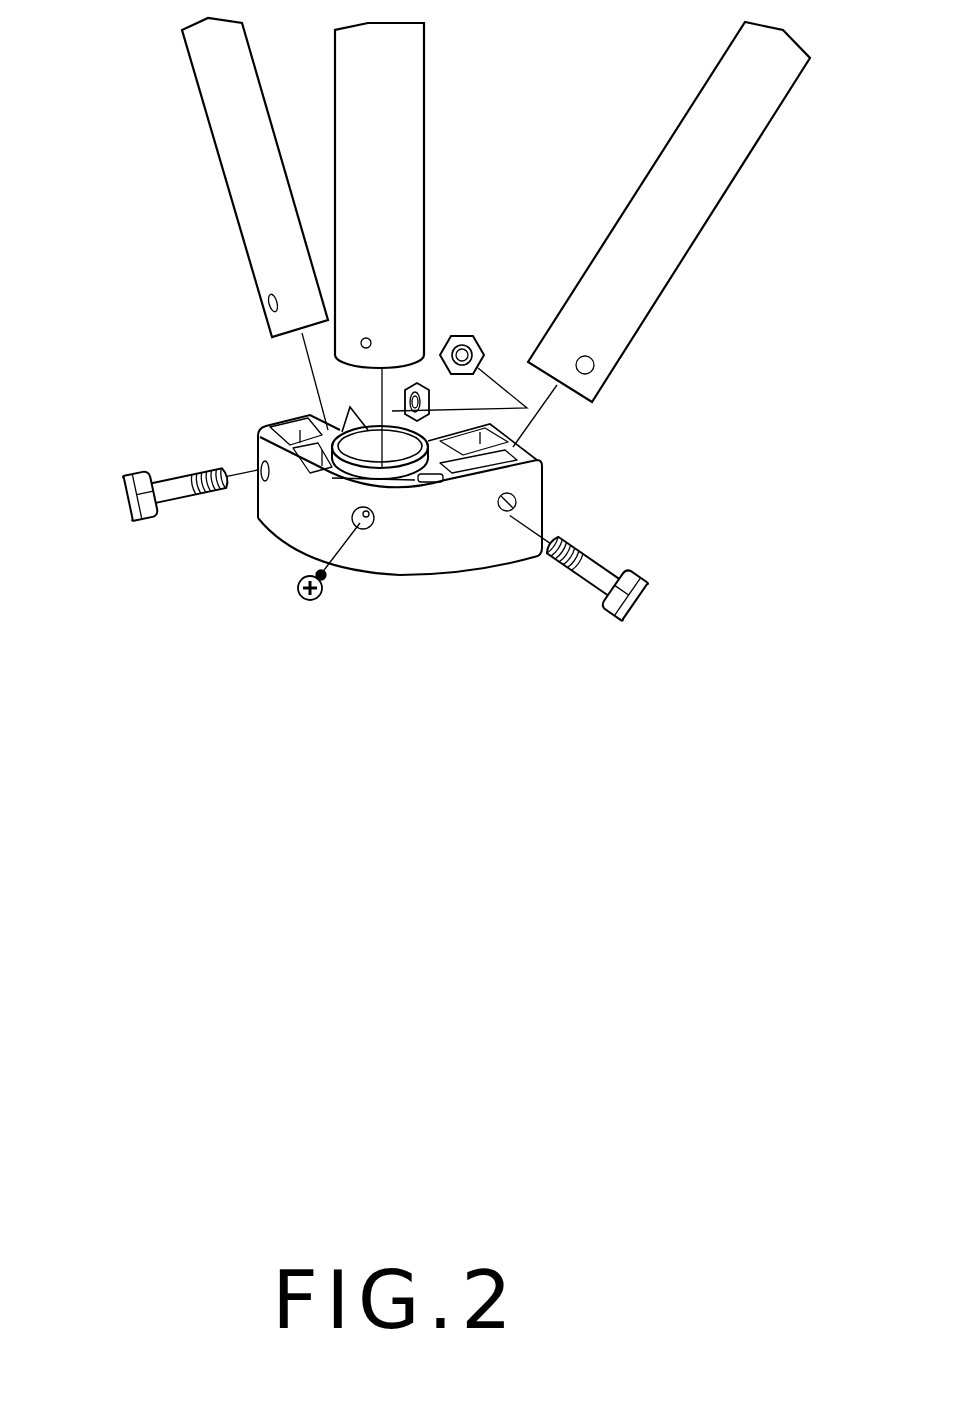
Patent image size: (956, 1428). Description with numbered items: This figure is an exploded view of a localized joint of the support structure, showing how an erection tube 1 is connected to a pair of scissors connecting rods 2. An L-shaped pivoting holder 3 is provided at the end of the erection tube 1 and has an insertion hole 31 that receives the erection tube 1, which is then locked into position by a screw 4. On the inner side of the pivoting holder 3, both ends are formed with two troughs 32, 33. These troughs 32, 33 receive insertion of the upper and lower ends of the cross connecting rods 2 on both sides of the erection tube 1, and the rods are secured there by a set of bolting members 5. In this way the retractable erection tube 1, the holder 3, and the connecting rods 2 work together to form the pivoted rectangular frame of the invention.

The erection tube 1 is at (418, 144).
The scissors connecting rod 2 is at (232, 142).
The L-shaped pivoting holder 3 is at (488, 540).
The insertion hole 31 is at (390, 447).
The trough 32 is at (513, 456).
The trough 33 is at (330, 426).
The screw 4 is at (295, 592).
The bolting member 5 is at (453, 332).